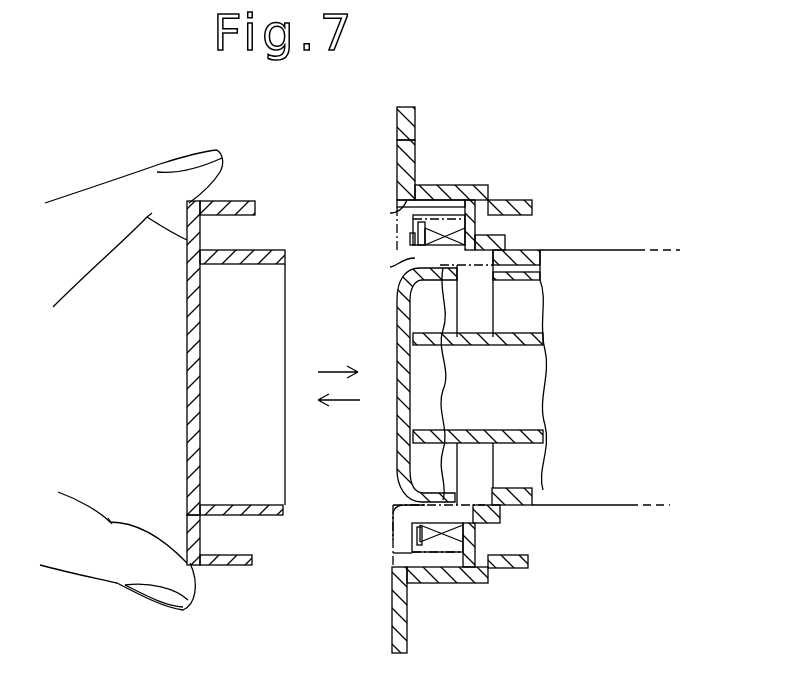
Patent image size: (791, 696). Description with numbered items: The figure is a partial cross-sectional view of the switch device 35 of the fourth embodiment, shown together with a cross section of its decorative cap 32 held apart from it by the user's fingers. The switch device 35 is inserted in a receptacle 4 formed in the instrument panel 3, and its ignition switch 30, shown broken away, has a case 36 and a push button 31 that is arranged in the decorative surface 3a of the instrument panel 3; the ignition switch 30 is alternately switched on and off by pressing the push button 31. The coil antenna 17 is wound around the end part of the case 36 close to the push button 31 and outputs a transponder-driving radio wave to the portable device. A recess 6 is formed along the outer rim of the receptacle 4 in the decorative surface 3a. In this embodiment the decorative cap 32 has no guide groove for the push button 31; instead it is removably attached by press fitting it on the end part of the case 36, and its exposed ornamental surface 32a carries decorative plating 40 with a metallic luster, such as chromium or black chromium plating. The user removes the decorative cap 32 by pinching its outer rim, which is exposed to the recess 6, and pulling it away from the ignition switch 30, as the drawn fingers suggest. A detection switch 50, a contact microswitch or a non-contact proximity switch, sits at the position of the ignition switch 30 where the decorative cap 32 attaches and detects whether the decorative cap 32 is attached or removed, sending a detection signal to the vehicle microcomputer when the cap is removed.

The instrument panel 3 is at (435, 132).
The decorative surface 3a is at (397, 133).
The receptacle 4 is at (412, 207).
The recess 6 is at (397, 162).
The coil antenna 17 is at (494, 384).
The ignition switch 30 is at (622, 521).
The push button 31 is at (405, 477).
The decorative cap 32 is at (253, 559).
The ornamental surface 32a is at (185, 545).
The switch device 35 is at (643, 203).
The case 36 is at (530, 507).
The decorative plating 40 is at (187, 238).
The detection switch 50 is at (412, 248).